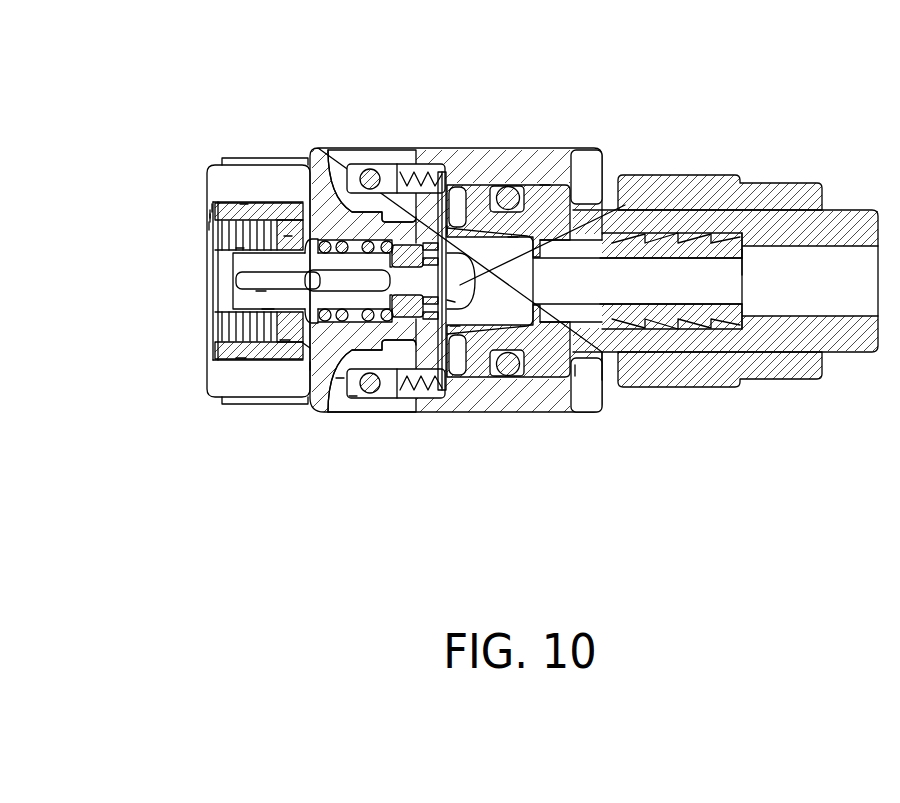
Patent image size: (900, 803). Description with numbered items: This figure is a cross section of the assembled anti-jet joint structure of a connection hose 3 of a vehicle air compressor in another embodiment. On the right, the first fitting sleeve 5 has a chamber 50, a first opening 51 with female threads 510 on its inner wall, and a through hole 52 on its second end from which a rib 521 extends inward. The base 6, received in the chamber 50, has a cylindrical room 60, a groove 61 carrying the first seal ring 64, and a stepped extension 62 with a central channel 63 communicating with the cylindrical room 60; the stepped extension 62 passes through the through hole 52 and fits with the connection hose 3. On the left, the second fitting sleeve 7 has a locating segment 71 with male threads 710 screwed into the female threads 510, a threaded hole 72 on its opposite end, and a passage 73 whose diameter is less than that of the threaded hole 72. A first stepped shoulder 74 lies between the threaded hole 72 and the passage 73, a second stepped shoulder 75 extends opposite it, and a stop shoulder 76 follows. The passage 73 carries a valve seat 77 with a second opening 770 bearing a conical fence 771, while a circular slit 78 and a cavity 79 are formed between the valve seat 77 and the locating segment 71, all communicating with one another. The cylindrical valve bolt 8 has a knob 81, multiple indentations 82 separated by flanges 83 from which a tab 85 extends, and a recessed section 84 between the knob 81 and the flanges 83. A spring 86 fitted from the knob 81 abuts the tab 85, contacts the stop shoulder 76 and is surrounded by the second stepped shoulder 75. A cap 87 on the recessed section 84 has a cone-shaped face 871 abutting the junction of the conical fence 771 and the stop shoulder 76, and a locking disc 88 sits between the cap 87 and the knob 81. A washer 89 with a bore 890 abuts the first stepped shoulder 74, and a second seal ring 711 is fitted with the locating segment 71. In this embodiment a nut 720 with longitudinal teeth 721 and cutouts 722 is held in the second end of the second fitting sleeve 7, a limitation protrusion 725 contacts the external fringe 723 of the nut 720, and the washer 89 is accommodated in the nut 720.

The connection hose 3 is at (855, 342).
The first fitting sleeve 5 is at (563, 412).
The chamber 50 is at (548, 383).
The first opening 51 is at (353, 398).
The through hole 52 is at (600, 355).
The female threads 510 is at (413, 382).
The rib 521 is at (587, 365).
The base 6 is at (557, 176).
The cylindrical room 60 is at (508, 194).
The groove 61 is at (546, 182).
The stepped extension 62 is at (657, 240).
The channel 63 is at (717, 260).
The first seal ring 64 is at (513, 240).
The second fitting sleeve 7 is at (218, 180).
The locating segment 71 is at (439, 172).
The threaded hole 72 is at (213, 235).
The passage 73 is at (323, 238).
The first stepped shoulder 74 is at (288, 237).
The second stepped shoulder 75 is at (340, 238).
The stop shoulder 76 is at (360, 176).
The valve seat 77 is at (441, 388).
The circular slit 78 is at (340, 378).
The cavity 79 is at (449, 230).
The male threads 710 is at (398, 180).
The second seal ring 711 is at (372, 388).
The nut 720 is at (213, 214).
The teeth 721 is at (214, 208).
The cutouts 722 is at (240, 360).
The external fringe 723 is at (211, 226).
The limitation protrusion 725 is at (213, 218).
The second opening 770 is at (446, 374).
The conical fence 771 is at (457, 328).
The valve bolt 8 is at (240, 262).
The knob 81 is at (647, 243).
The indentations 82 is at (260, 293).
The flanges 83 is at (285, 340).
The recessed section 84 is at (356, 239).
The tab 85 is at (305, 345).
The spring 86 is at (312, 365).
The cap 87 is at (402, 245).
The locking disc 88 is at (461, 235).
The washer 89 is at (243, 207).
The cone-shaped face 871 is at (462, 228).
The bore 890 is at (240, 243).